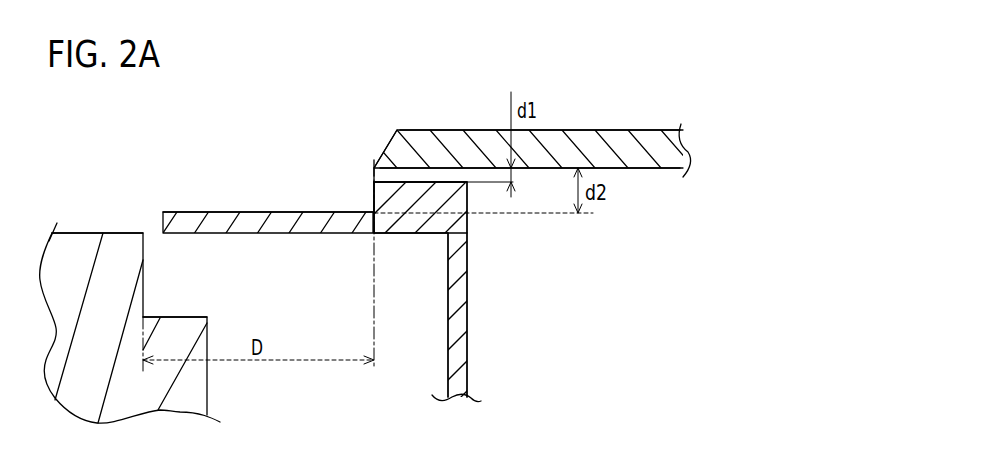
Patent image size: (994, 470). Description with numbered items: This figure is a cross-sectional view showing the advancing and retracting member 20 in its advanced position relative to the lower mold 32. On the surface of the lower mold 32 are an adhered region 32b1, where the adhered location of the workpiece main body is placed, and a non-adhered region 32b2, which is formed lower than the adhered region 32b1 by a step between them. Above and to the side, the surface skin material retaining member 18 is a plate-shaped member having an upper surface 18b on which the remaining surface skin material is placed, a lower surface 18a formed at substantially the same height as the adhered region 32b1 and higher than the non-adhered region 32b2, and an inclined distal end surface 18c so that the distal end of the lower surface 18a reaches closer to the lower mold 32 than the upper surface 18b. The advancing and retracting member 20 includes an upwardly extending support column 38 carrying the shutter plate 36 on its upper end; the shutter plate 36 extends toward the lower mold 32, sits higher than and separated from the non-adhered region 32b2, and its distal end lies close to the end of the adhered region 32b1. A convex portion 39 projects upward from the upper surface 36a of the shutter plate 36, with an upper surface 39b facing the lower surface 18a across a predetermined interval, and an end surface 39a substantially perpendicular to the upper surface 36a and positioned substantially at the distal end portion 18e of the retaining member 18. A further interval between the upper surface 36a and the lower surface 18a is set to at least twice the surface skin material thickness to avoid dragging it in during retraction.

The surface skin material retaining member 18 is at (583, 140).
The lower surface 18a is at (645, 170).
The upper surface 18b is at (618, 130).
The distal end surface 18c is at (390, 143).
The distal end portion 18e is at (373, 168).
The advancing and retracting member 20 is at (433, 245).
The lower mold 32 is at (77, 332).
The adhered region 32b1 is at (93, 232).
The non-adhered region 32b2 is at (177, 315).
The shutter plate 36 is at (282, 223).
The upper surface 36a is at (193, 210).
The support column 38 is at (457, 358).
The convex portion 39 is at (402, 198).
The end surface 39a is at (373, 198).
The upper surface 39b is at (420, 181).